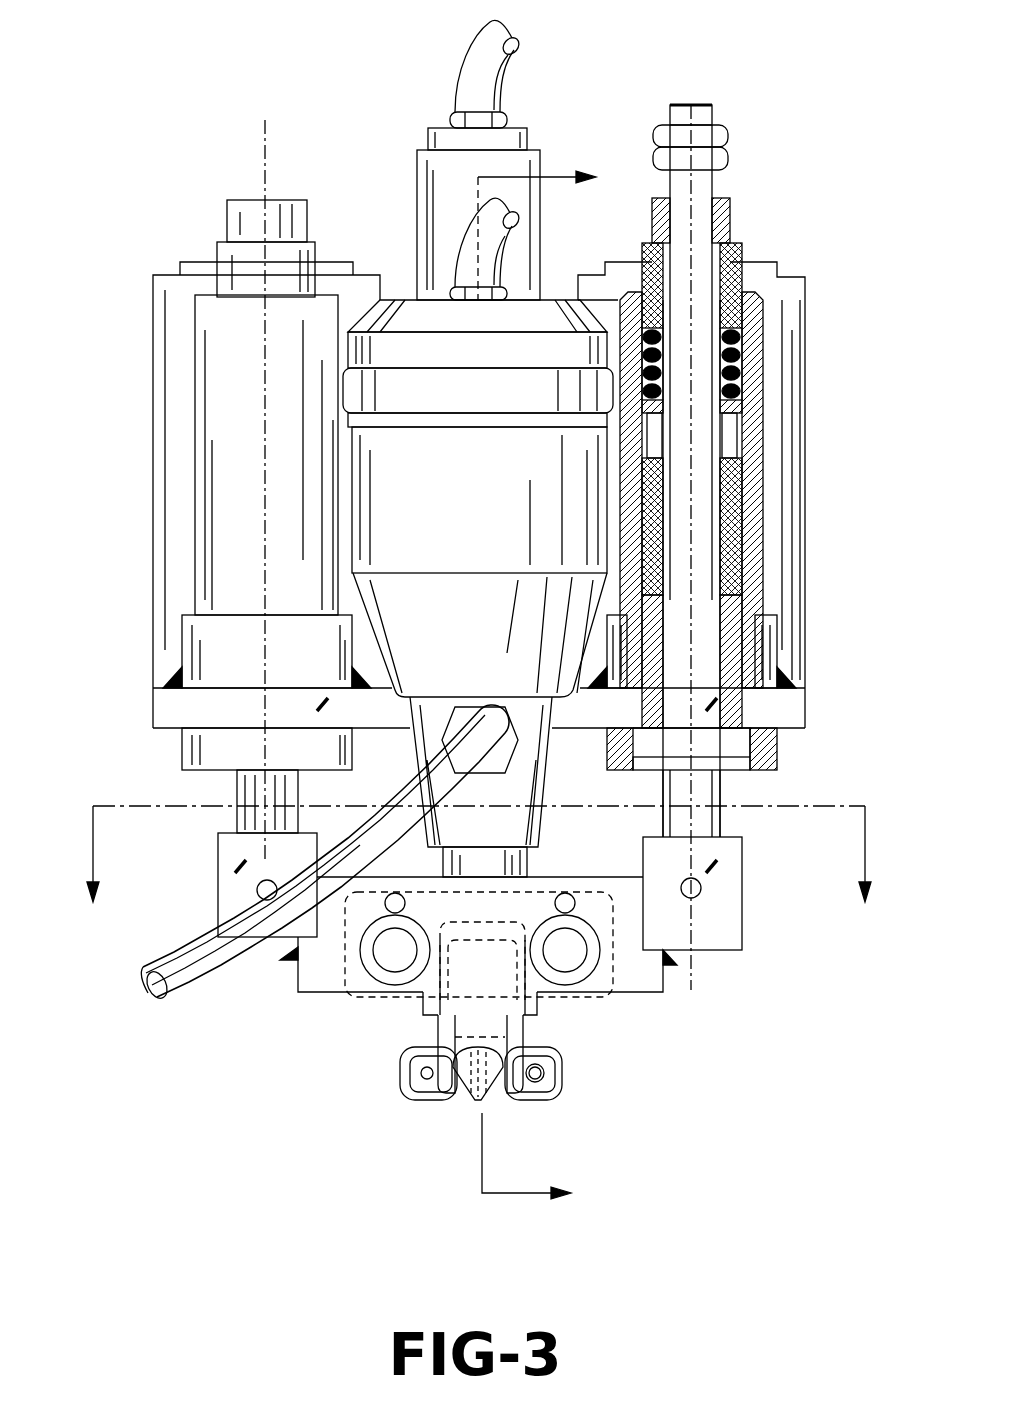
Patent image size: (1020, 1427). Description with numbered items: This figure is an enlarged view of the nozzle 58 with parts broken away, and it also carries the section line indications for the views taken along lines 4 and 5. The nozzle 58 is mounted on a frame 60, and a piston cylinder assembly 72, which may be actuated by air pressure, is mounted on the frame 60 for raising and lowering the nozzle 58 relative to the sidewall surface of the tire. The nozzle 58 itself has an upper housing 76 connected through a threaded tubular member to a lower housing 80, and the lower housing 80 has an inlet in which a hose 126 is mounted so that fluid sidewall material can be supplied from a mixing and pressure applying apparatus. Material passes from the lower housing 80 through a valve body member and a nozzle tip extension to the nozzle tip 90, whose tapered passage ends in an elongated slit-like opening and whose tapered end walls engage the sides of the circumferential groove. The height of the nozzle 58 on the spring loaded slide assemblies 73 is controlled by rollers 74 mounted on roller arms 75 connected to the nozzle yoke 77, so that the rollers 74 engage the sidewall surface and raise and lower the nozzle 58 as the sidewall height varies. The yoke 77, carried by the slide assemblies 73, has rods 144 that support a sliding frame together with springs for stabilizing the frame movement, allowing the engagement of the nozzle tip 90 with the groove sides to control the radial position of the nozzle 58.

The nozzle 58 is at (412, 300).
The frame 60 is at (167, 710).
The piston cylinder assembly 72 is at (445, 135).
The slide assemblies 73 is at (215, 425).
The rollers 74 is at (410, 1093).
The roller arms 75 is at (543, 1080).
The upper housing 76 is at (458, 507).
The nozzle yoke 77 is at (655, 983).
The lower housing 80 is at (512, 800).
The nozzle tip 90 is at (477, 1098).
The hose 126 is at (203, 963).
The rods 144 is at (397, 953).
The section line 4- 4 is at (480, 875).
The section line 5- 5 is at (546, 686).